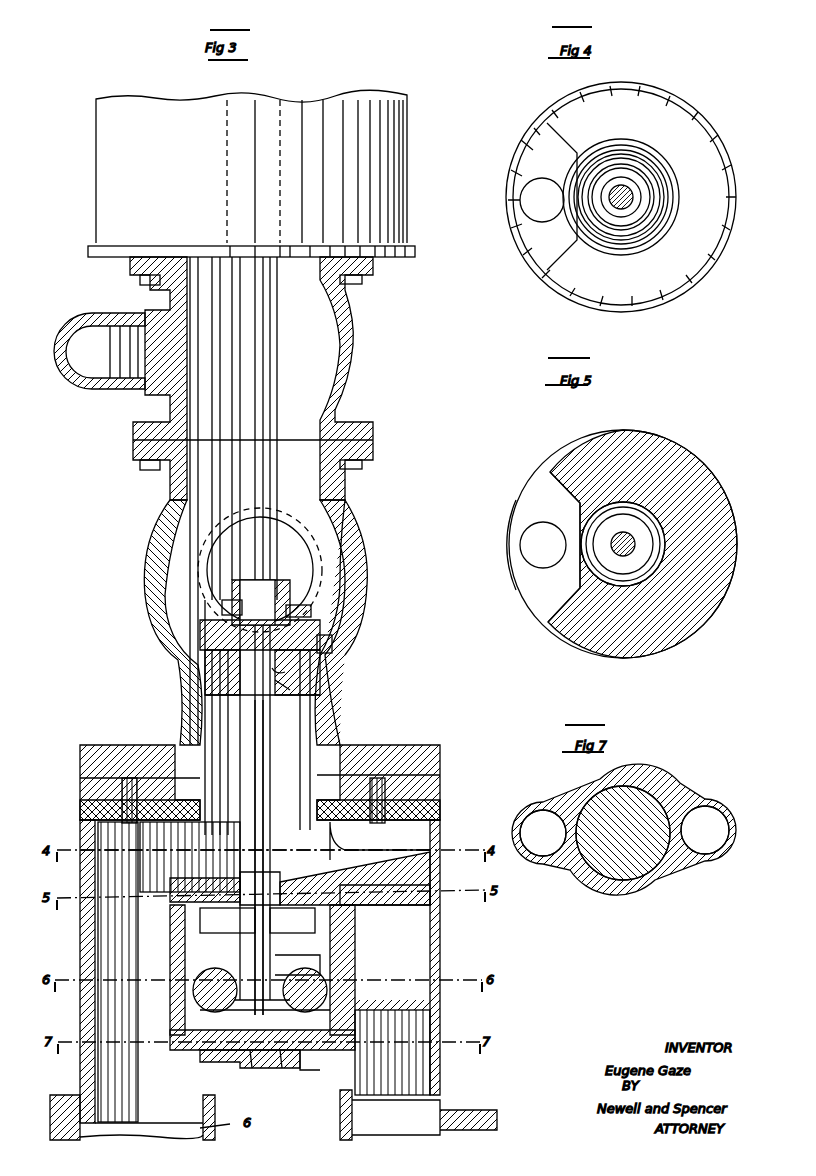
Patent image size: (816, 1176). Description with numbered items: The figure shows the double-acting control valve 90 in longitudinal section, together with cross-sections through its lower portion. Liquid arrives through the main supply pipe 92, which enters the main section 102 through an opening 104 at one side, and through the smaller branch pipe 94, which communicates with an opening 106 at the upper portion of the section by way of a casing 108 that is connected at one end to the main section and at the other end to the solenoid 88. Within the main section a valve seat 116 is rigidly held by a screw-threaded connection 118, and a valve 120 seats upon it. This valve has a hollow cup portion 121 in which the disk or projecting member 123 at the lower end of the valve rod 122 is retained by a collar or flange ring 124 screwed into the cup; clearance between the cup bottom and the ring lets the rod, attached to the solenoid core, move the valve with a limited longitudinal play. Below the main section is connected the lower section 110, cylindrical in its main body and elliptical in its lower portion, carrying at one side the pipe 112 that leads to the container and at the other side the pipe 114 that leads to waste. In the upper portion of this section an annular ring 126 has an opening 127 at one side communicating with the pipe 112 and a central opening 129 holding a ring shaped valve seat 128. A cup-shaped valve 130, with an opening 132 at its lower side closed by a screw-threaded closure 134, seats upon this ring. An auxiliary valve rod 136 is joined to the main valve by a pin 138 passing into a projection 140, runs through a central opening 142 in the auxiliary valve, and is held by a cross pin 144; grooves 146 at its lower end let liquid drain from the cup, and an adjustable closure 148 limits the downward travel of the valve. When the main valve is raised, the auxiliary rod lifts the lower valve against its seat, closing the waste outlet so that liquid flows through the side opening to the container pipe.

In FIG. 3, the solenoid 88 is at (390, 178).
In FIG. 3, the control valve 90 is at (172, 680).
In FIG. 3, the main supply pipe 92 is at (320, 520).
In FIG. 3, the branch pipe 94 is at (113, 398).
In FIG. 3, the main section 102 is at (347, 594).
In FIG. 3, the opening 104 is at (298, 552).
In FIG. 3, the opening 106 is at (300, 460).
In FIG. 3, the casing 108 is at (353, 355).
In FIG. 3, the lower section 110 is at (440, 948).
In FIG. 4, the lower section 110 is at (722, 145).
In FIG. 5, the lower section 110 is at (730, 490).
In FIG. 7, the lower section 110 is at (672, 873).
In FIG. 3, the pipe 112 is at (100, 1078).
In FIG. 4, the pipe 112 is at (520, 200).
In FIG. 5, the pipe 112 is at (530, 550).
In FIG. 7, the pipe 112 is at (553, 792).
In FIG. 3, the pipe 114 is at (418, 1070).
In FIG. 7, the pipe 114 is at (710, 818).
In FIG. 3, the valve seat 116 is at (333, 650).
In FIG. 3, the screw-threaded connection 118 is at (322, 668).
In FIG. 3, the valve 120 is at (322, 632).
In FIG. 3, the hollow cup portion 121 is at (300, 612).
In FIG. 3, the valve rod 122 is at (262, 372).
In FIG. 3, the disk or projecting member 123 is at (258, 612).
In FIG. 3, the collar or flange ring 124 is at (292, 596).
In FIG. 3, the annular ring 126 is at (398, 900).
In FIG. 4, the annular ring 126 is at (668, 126).
In FIG. 5, the annular ring 126 is at (680, 465).
In FIG. 3, the opening 127 is at (110, 882).
In FIG. 4, the opening 127 is at (536, 147).
In FIG. 5, the opening 127 is at (536, 495).
In FIG. 3, the ring shaped valve seat 128 is at (330, 960).
In FIG. 4, the ring shaped valve seat 128 is at (645, 228).
In FIG. 3, the opening 129 is at (320, 885).
In FIG. 5, the opening 129 is at (660, 550).
In FIG. 3, the valve 130 is at (327, 990).
In FIG. 4, the valve 130 is at (635, 212).
In FIG. 5, the valve 130 is at (635, 565).
In FIG. 3, the opening 132 is at (322, 968).
In FIG. 3, the screw-threaded closure 134 is at (310, 1072).
In FIG. 3, the auxiliary valve rod 136 is at (282, 718).
In FIG. 4, the auxiliary valve rod 136 is at (633, 194).
In FIG. 5, the auxiliary valve rod 136 is at (630, 550).
In FIG. 3, the pin 138 is at (299, 694).
In FIG. 3, the projection 140 is at (285, 672).
In FIG. 3, the central opening 142 is at (295, 958).
In FIG. 4, the central opening 142 is at (630, 185).
In FIG. 3, the rod or pin 144 is at (282, 1068).
In FIG. 3, the grooves 146 is at (254, 1066).
In FIG. 3, the closure 148 is at (230, 1060).
In FIG. 7, the closure 148 is at (640, 805).